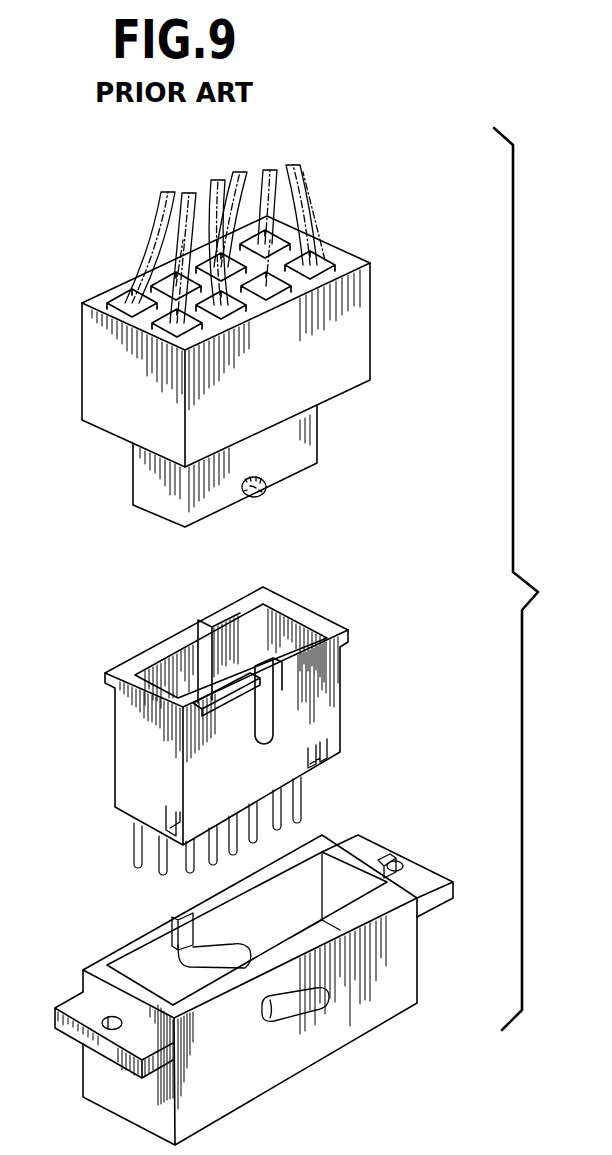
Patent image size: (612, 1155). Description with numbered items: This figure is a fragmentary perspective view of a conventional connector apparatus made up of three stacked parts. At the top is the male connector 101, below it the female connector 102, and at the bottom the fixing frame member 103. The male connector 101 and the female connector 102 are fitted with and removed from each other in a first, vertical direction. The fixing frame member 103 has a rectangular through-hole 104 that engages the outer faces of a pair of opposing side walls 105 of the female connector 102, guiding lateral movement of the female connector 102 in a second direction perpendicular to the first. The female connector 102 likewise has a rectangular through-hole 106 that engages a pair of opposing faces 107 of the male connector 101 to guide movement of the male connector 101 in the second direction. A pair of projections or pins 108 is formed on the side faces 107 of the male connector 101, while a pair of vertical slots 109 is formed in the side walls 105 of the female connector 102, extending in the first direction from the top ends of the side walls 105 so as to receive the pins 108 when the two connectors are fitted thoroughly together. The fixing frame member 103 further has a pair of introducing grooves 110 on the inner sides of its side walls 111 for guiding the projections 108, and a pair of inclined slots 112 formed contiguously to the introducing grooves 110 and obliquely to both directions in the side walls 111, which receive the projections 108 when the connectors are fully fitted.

The male connector 101 is at (372, 335).
The opposing faces 107 is at (315, 427).
The pins 108 is at (265, 488).
The female connector 102 is at (341, 687).
The side walls 105 is at (325, 723).
The rectangular through-hole 106 is at (253, 625).
The vertical slots 109 is at (257, 712).
The fixing frame member 103 is at (417, 950).
The rectangular through-hole 104 is at (307, 876).
The introducing grooves 110 is at (187, 925).
The inclined slots 112 is at (202, 955).
The side walls 111 is at (368, 1013).